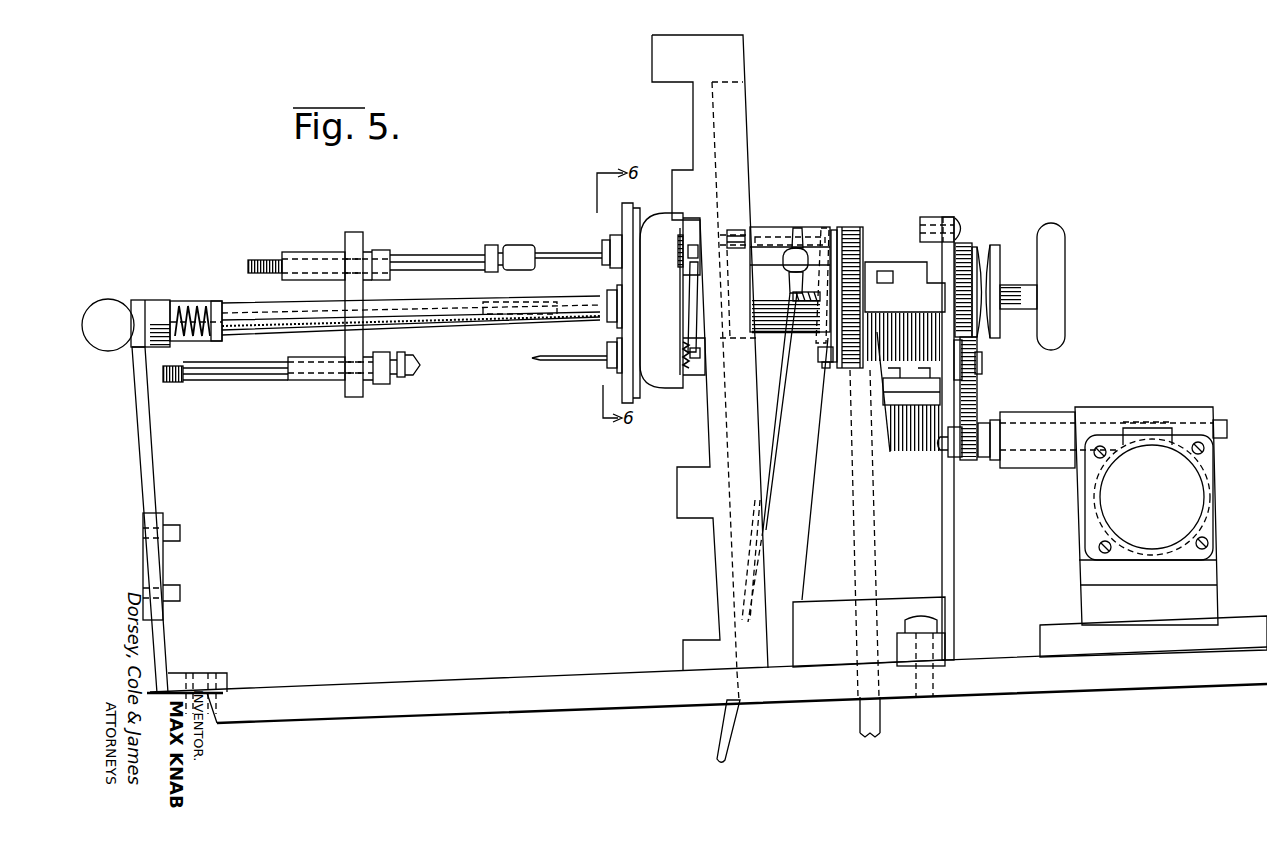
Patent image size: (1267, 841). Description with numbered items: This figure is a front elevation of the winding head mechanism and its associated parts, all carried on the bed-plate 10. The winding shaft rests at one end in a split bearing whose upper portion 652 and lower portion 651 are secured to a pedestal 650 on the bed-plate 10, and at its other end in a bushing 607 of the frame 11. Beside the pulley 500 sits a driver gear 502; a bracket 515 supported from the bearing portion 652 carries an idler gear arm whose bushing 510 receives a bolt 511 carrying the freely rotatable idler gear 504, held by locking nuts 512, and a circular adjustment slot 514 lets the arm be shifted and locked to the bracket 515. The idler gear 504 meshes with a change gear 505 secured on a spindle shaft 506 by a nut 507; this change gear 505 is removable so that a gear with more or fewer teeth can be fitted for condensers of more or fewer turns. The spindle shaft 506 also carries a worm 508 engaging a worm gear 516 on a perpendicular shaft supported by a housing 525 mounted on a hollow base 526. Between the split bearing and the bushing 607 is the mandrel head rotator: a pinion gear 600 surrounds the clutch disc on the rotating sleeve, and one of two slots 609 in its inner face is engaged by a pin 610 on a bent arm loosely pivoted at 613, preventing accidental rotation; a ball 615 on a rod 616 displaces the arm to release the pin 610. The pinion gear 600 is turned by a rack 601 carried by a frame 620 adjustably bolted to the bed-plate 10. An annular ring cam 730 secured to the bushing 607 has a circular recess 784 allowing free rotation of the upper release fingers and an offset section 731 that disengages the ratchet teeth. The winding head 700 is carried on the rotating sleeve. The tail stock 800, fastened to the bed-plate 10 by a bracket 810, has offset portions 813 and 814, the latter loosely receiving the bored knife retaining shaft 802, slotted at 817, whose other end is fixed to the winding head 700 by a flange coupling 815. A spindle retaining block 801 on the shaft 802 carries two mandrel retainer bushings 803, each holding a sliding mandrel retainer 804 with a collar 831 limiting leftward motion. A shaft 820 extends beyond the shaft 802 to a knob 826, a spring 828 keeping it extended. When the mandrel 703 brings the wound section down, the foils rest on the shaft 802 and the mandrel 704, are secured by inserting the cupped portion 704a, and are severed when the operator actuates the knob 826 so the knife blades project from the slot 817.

The bed-plate 10 is at (446, 684).
The frame 11 is at (745, 122).
The pulley 500 is at (1000, 242).
The driver gear 502 is at (964, 245).
The idler gear 504 is at (1038, 408).
The change gear 505 is at (985, 460).
The spindle shaft 506 is at (942, 452).
The nut 507 is at (955, 457).
The worm 508 is at (1158, 406).
The bushing 510 is at (978, 388).
The bolt 511 is at (982, 370).
The locking nuts 512 is at (968, 338).
The circular adjustment slot 514 is at (944, 217).
The bracket 515 is at (933, 214).
The worm gear 516 is at (1218, 495).
The housing 525 is at (1110, 410).
The hollow base 526 is at (1050, 625).
The pinion gear 600 is at (846, 225).
The rack 601 is at (882, 728).
The bushing 607 is at (764, 258).
The slots 609 is at (818, 362).
The pin 610 is at (828, 230).
The pivot 613 is at (830, 363).
The ball 615 is at (790, 268).
The rod 616 is at (738, 742).
The frame 620 is at (810, 521).
The pedestal 650 is at (955, 550).
The lower portion 651 is at (912, 302).
The upper portion 652 is at (877, 262).
The winding head 700 is at (645, 403).
The mandrel 703 is at (548, 250).
The mandrel 704 is at (610, 313).
The cupped portion 704a is at (511, 270).
The annular ring cam 730 is at (690, 380).
The offset section 731 is at (697, 377).
The circular recess 784 is at (698, 253).
The tail stock 800 is at (152, 460).
The spindle retaining block 801 is at (356, 398).
The knife retaining shaft 802 is at (410, 382).
The mandrel retainer bushings 803 is at (381, 240).
The mandrel retainer 804 is at (443, 256).
The bracket 810 is at (170, 633).
The offset portion 813 is at (173, 300).
The offset portion 814 is at (222, 300).
The flange coupling 815 is at (613, 330).
The slot 817 is at (520, 307).
The shaft 820 is at (280, 335).
The knob 826 is at (100, 298).
The spring 828 is at (202, 332).
The collar 831 is at (492, 244).